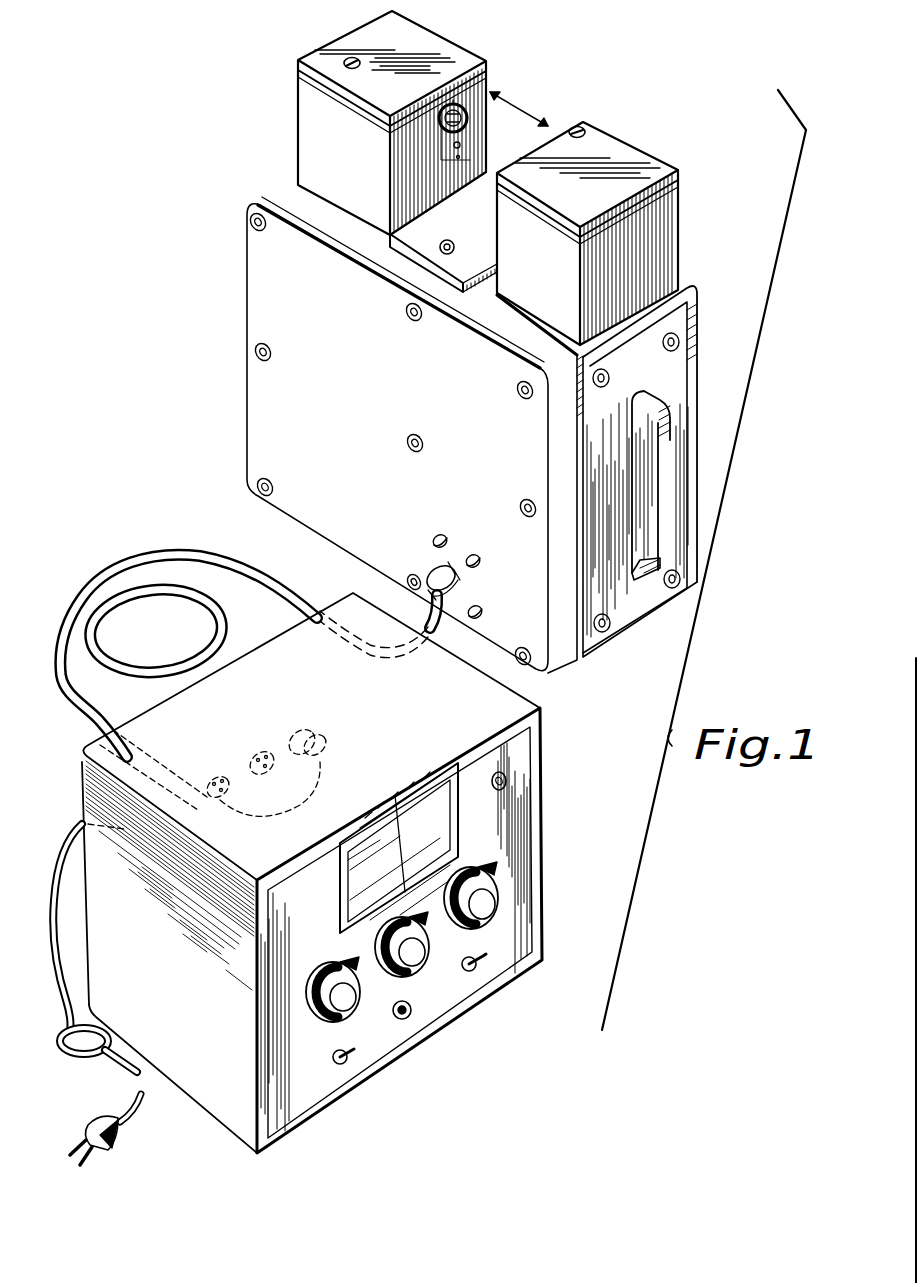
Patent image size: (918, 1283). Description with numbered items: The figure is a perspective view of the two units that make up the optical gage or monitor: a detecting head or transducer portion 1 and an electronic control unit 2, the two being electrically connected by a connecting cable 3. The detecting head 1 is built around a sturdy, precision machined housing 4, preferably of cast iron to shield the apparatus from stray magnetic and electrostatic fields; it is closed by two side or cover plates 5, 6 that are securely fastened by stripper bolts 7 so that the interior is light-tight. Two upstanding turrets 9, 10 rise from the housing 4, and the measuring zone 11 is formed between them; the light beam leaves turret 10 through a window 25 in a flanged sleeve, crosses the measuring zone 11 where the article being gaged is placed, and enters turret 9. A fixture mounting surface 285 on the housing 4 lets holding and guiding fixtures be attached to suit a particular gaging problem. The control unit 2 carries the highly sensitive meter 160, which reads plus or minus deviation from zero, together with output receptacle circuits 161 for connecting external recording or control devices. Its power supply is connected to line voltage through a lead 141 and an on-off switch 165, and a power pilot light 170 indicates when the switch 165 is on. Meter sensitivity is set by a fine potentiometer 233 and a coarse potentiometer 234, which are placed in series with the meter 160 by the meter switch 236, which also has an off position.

The detecting head 1 is at (219, 237).
The electronic control unit 2 is at (562, 776).
The connecting cable 3 is at (257, 585).
The housing 4 is at (680, 368).
The side plate 5 is at (255, 325).
The side plate 6 is at (705, 316).
The stripper bolt 7 is at (260, 492).
The turret 9 is at (367, 123).
The turret 10 is at (683, 205).
The measuring zone 11 is at (514, 104).
The window 25 is at (462, 162).
The lead 141 is at (98, 1124).
The meter 160 is at (345, 866).
The output receptacle circuits 161 is at (256, 753).
The on-off switch 165 is at (478, 970).
The power pilot light 170 is at (408, 1020).
The fine potentiometer 233 is at (497, 890).
The coarse potentiometer 234 is at (333, 975).
The meter switch 236 is at (345, 1068).
The fixture mounting surface 285 is at (418, 246).